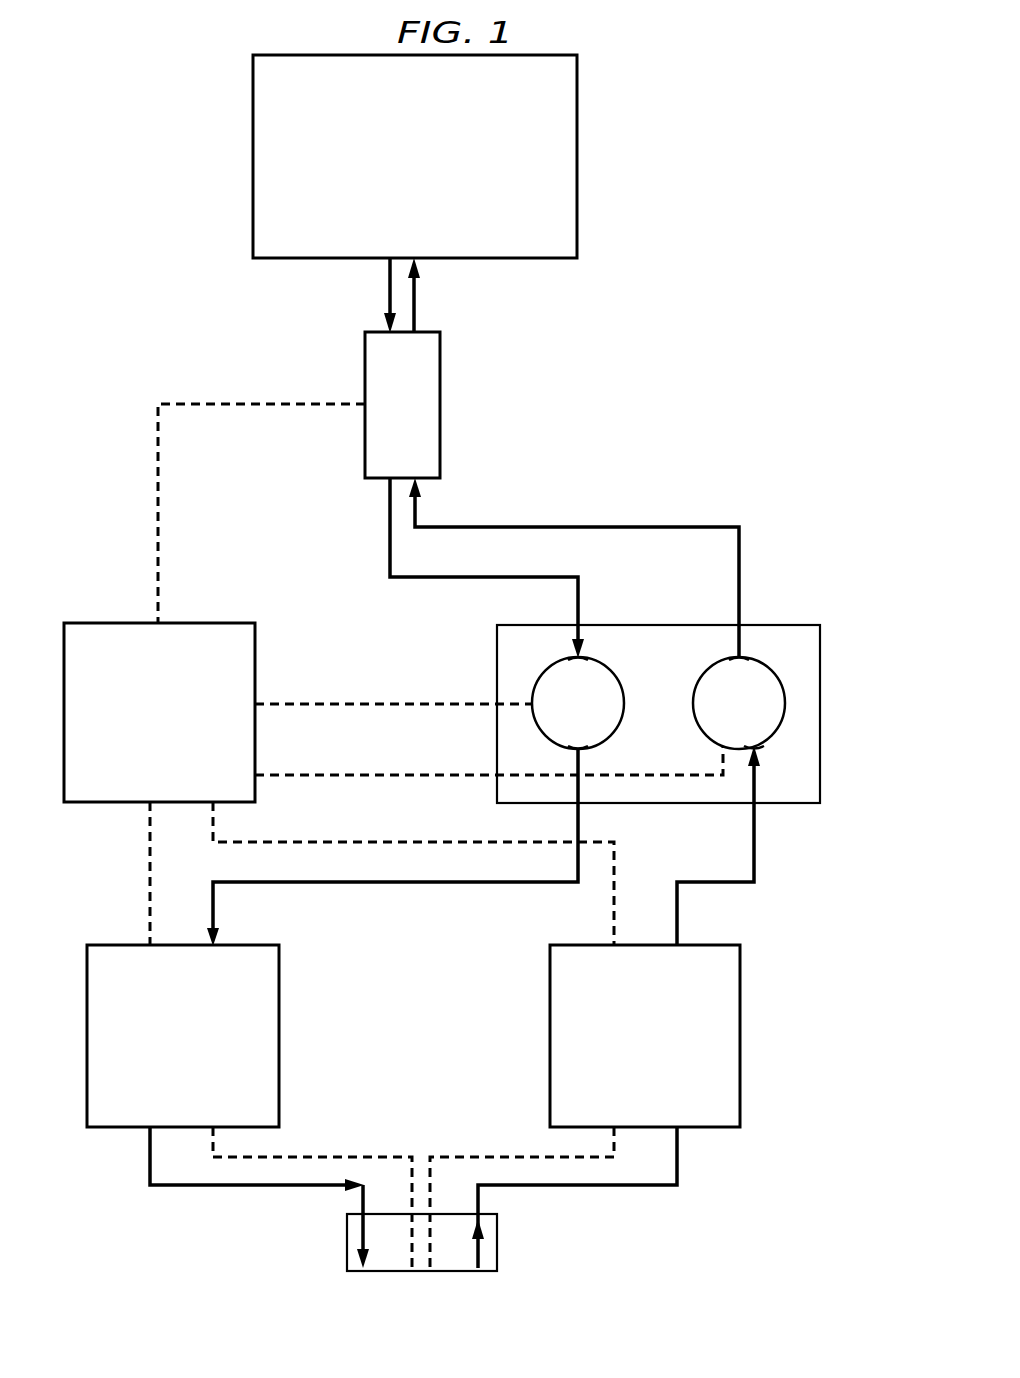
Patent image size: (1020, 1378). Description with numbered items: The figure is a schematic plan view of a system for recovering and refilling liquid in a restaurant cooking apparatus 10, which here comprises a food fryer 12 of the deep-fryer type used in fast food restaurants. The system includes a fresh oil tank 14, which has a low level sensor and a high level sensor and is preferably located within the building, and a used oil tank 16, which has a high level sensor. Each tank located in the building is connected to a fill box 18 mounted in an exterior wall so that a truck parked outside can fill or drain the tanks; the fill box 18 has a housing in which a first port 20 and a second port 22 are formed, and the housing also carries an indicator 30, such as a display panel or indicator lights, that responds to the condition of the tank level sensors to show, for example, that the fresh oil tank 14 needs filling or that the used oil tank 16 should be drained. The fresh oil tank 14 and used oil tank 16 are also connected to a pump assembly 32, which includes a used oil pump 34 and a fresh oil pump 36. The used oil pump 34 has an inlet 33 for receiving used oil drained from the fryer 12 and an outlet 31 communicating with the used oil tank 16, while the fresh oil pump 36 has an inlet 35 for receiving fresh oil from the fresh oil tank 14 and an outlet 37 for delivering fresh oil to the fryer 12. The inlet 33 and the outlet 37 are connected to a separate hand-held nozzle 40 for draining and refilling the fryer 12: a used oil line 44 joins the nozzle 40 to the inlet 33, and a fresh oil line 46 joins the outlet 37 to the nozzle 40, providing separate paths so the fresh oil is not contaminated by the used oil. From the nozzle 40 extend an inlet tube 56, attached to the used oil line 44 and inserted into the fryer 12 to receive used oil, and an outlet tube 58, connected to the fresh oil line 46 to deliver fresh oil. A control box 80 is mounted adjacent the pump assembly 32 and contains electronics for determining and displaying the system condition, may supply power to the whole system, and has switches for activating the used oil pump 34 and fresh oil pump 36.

The cooking apparatus 10 is at (662, 88).
The food fryer 12 is at (578, 178).
The fresh oil tank 14 is at (550, 1040).
The used oil tank 16 is at (279, 1037).
The fill box 18 is at (507, 1235).
The first port 20 is at (360, 1237).
The second port 22 is at (482, 1266).
The indicator 30 is at (425, 1275).
The outlet 31 is at (585, 750).
The pump assembly 32 is at (758, 596).
The inlet 33 is at (583, 658).
The used oil pump 34 is at (620, 678).
The inlet 35 is at (758, 749).
The fresh oil pump 36 is at (695, 712).
The outlet 37 is at (743, 658).
The nozzle 40 is at (440, 405).
The used oil line 44 is at (440, 578).
The fresh oil line 46 is at (596, 527).
The inlet tube 56 is at (388, 293).
The outlet tube 58 is at (416, 313).
The control box 80 is at (255, 660).